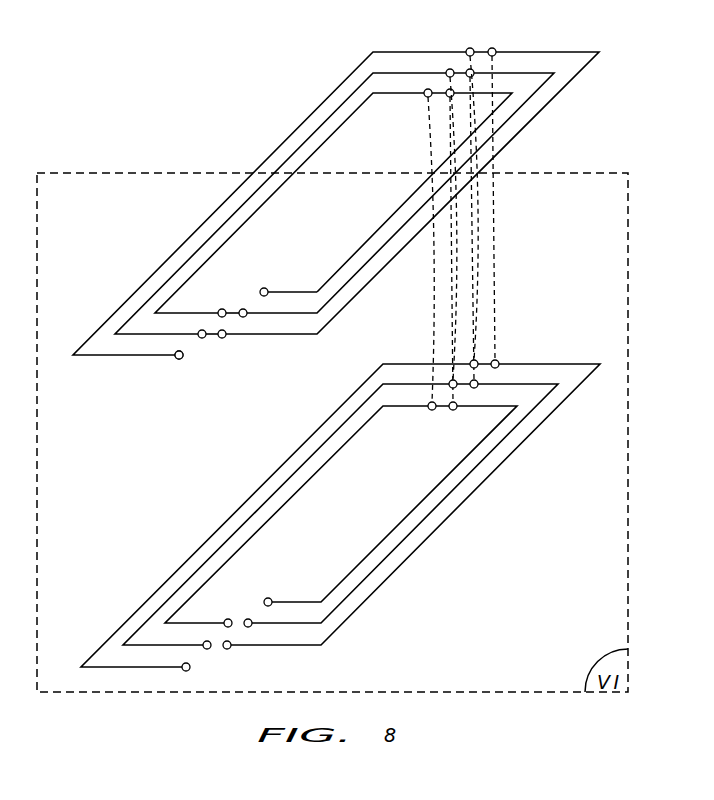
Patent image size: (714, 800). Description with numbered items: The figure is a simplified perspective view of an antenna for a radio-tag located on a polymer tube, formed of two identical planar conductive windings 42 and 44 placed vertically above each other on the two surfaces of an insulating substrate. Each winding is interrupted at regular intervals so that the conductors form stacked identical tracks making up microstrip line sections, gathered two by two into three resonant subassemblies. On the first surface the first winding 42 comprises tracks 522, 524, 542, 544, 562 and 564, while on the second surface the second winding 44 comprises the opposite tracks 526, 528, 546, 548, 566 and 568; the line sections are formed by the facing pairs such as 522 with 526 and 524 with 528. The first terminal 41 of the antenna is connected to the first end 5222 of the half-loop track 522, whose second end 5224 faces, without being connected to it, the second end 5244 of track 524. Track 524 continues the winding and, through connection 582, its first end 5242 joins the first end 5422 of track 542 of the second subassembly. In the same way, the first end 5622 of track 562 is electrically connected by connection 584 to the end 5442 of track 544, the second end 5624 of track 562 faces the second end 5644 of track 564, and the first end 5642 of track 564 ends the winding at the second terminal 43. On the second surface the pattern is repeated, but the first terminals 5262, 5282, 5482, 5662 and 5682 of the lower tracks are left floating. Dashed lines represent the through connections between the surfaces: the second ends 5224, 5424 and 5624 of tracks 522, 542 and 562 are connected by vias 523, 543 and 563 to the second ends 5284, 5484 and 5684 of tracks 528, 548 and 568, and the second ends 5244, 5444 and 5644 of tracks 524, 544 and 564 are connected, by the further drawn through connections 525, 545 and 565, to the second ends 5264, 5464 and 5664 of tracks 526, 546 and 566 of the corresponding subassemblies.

The first terminal 41 is at (176, 358).
The first winding 42 is at (267, 85).
The second terminal 43 is at (266, 289).
The second winding 44 is at (453, 616).
The track 522 is at (165, 265).
The track 524 is at (509, 143).
The track 542 is at (232, 215).
The track 544 is at (524, 104).
The track 562 is at (328, 140).
The track 564 is at (348, 266).
The first end of track 564 5642 is at (305, 291).
The connection 582 is at (212, 340).
The connection 584 is at (233, 311).
The via 523 is at (492, 298).
The via connection 525 is at (482, 271).
The via 543 is at (466, 258).
The via connection 545 is at (458, 276).
The via 563 is at (447, 327).
The via connection 565 is at (435, 353).
The first end of track 522 5222 is at (128, 357).
The second end of track 522 5224 is at (470, 48).
The first end of track 524 5242 is at (226, 338).
The second end of track 524 5244 is at (493, 48).
The first end of track 542 5422 is at (201, 339).
The second end of track 542 5424 is at (450, 69).
The end of track 544 5442 is at (246, 311).
The second end of track 544 5444 is at (471, 69).
The first end of track 562 5622 is at (219, 311).
The second end of track 562 5624 is at (425, 97).
The second end of track 564 5644 is at (448, 98).
The track 526 is at (190, 556).
The track 528 is at (482, 485).
The track 546 is at (240, 524).
The track 548 is at (430, 513).
The track 566 is at (295, 488).
The track 568 is at (385, 542).
The first terminal of track 526 5262 is at (184, 670).
The second end of track 526 5264 is at (476, 359).
The first terminal of track 528 5282 is at (231, 643).
The second end of track 528 5284 is at (496, 359).
The second end of track 546 5464 is at (457, 386).
The first terminal of track 548 5482 is at (209, 648).
The second end of track 548 5484 is at (478, 381).
The first terminal of track 566 5662 is at (226, 620).
The second end of track 566 5664 is at (429, 409).
The first terminal of track 568 5682 is at (271, 598).
The second end of track 568 5684 is at (453, 410).